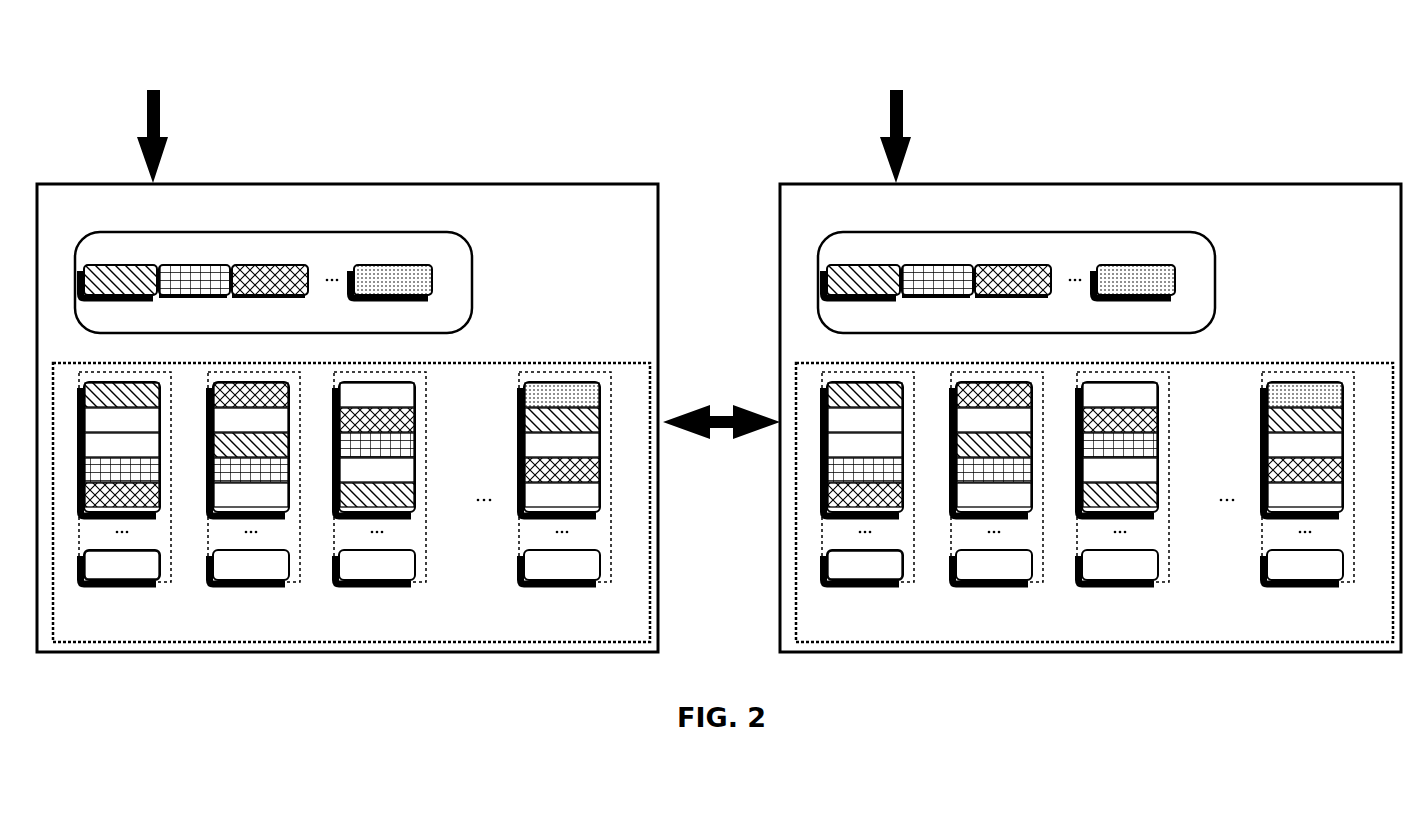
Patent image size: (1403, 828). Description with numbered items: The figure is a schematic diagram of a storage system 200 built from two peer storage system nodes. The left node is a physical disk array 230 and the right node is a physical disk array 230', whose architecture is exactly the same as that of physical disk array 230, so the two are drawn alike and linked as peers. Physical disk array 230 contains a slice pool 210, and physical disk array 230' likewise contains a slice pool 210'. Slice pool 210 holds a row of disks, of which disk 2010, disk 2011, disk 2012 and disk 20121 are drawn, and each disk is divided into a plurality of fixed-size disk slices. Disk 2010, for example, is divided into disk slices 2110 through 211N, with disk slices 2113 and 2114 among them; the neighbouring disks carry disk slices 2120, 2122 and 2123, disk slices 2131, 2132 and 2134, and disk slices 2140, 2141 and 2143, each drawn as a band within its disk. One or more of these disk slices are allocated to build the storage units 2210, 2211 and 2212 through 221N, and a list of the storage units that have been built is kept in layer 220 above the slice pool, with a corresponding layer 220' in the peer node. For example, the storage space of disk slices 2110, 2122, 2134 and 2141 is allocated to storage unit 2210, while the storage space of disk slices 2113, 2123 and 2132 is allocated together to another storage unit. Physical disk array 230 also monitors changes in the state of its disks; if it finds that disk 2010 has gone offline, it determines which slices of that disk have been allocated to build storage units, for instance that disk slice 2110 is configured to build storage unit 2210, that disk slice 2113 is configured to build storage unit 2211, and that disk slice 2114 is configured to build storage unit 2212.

The storage system 200 is at (410, 61).
The physical disk array 230 is at (347, 371).
The physical disk array 230' is at (1090, 371).
The layer 220 is at (273, 269).
The layer 220' is at (1016, 270).
The storage unit 2210 is at (108, 264).
The storage unit 2211 is at (182, 264).
The storage unit 2212 is at (252, 264).
The storage unit 221N is at (368, 264).
The slice pool 210 is at (351, 492).
The slice pool 210' is at (1094, 492).
The disk 2010 is at (97, 584).
The disk 2011 is at (226, 584).
The disk 2012 is at (352, 584).
The disk 20121 is at (537, 584).
The disk slice 2110 is at (160, 393).
The disk slice 2113 is at (160, 466).
The disk slice 2114 is at (160, 490).
The disk slice 211N is at (165, 578).
The disk slice 2120 is at (289, 393).
The disk slice 2122 is at (289, 443).
The disk slice 2123 is at (289, 466).
The disk slice 2131 is at (415, 418).
The disk slice 2132 is at (415, 443).
The disk slice 2134 is at (415, 492).
The disk slice 2140 is at (600, 393).
The disk slice 2141 is at (600, 418).
The disk slice 2143 is at (600, 468).